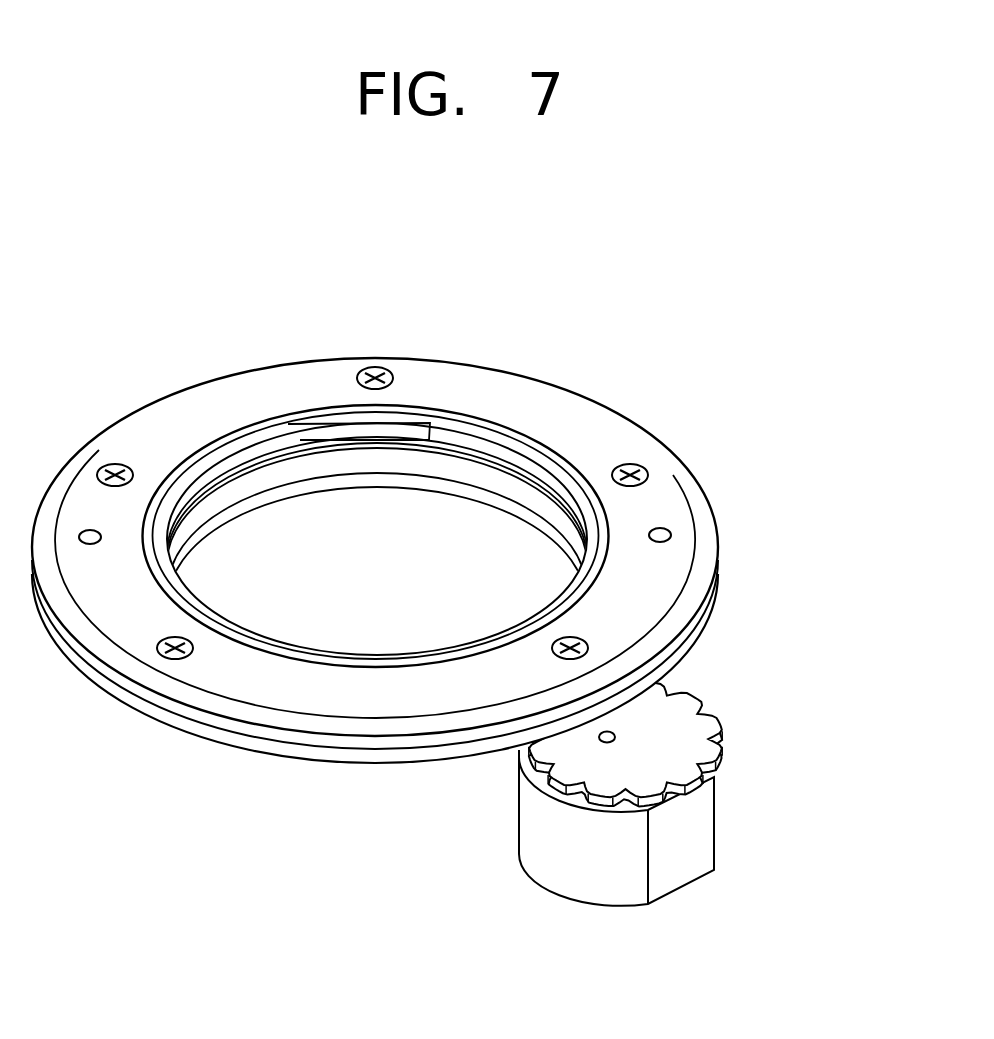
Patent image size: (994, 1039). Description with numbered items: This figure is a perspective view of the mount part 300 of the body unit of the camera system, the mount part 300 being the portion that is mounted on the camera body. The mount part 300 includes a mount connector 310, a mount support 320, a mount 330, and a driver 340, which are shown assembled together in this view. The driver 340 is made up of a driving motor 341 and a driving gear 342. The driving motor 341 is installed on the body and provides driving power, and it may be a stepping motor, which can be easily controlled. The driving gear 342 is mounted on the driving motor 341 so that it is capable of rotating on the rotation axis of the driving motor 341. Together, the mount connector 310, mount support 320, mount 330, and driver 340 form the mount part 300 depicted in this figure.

The mount part 300 is at (482, 594).
The mount connector 310 is at (487, 440).
The mount support 320 is at (705, 547).
The mount 330 is at (235, 395).
The driver 340 is at (725, 786).
The driving motor 341 is at (697, 828).
The driving gear 342 is at (687, 737).